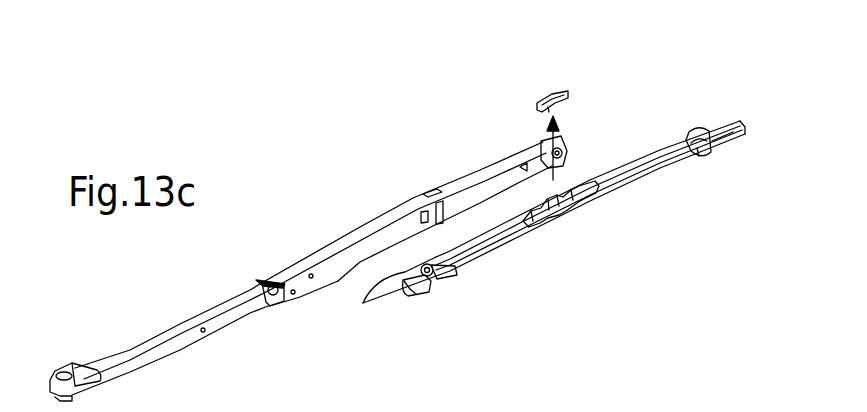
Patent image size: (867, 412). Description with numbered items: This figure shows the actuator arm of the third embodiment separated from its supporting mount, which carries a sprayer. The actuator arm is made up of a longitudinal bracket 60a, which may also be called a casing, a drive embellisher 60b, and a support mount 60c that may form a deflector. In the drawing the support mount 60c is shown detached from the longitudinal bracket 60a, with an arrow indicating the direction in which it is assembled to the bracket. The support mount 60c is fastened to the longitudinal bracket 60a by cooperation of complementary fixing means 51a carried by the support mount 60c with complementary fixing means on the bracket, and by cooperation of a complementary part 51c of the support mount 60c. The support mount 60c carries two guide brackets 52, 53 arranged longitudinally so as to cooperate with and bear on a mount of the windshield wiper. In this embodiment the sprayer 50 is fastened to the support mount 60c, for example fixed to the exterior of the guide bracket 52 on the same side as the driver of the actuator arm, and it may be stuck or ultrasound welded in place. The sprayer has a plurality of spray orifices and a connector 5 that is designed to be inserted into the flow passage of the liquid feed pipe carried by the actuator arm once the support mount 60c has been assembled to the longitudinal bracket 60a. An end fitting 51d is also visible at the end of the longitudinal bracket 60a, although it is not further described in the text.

The connector 5 is at (415, 290).
The sprayer 50 is at (448, 268).
The complementary fixing means 51a is at (562, 210).
The complementary part 51c is at (553, 87).
The end piece of rail 51d is at (532, 144).
The guide bracket 52 is at (430, 263).
The guide bracket 53 is at (696, 134).
The longitudinal bracket 60a is at (295, 272).
The drive embellisher 60b is at (147, 346).
The support mount 60c is at (640, 172).